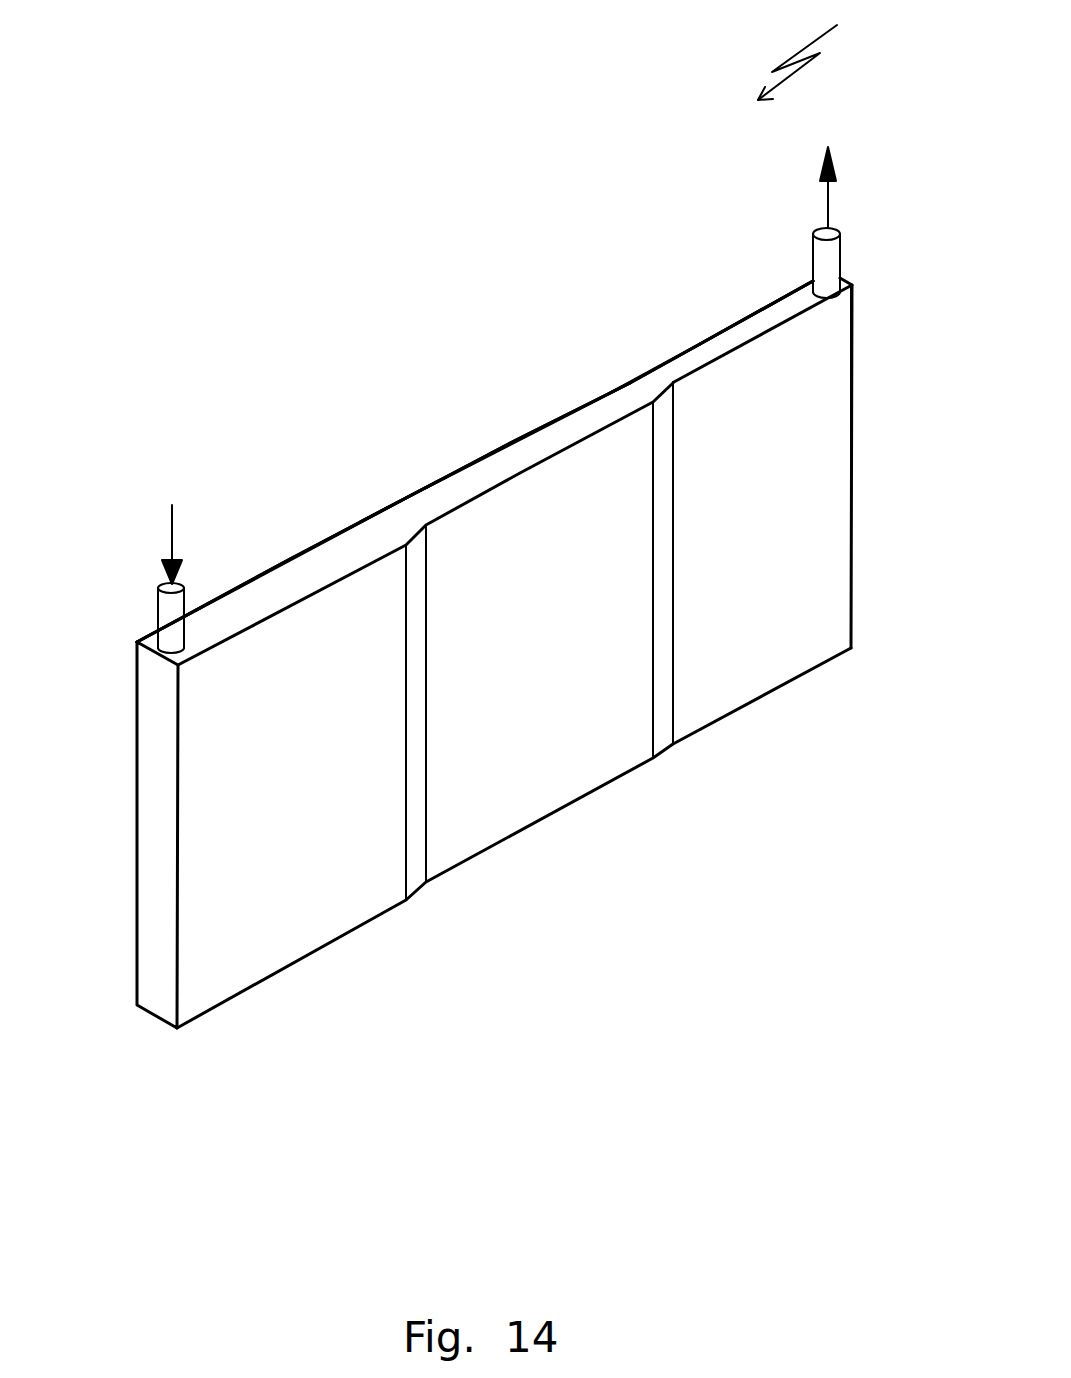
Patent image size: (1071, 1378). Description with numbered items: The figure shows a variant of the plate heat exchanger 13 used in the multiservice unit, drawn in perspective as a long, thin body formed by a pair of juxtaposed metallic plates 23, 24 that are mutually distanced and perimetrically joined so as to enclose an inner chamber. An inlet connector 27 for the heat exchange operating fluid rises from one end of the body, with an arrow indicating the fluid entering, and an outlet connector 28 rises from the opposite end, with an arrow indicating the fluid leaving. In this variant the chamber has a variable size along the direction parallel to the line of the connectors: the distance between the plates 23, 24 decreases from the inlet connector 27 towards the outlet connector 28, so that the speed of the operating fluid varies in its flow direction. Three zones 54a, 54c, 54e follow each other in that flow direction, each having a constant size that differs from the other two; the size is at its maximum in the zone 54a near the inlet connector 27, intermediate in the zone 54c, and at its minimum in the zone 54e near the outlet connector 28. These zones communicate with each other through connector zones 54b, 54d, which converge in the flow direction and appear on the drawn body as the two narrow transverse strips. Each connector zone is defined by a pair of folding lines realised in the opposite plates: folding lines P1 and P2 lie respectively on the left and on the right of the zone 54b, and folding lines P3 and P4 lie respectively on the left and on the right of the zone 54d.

The heat exchanger 13 is at (817, 51).
The metallic plate 23 is at (324, 582).
The metallic plate 24 is at (253, 577).
The inlet connector 27 is at (168, 610).
The outlet connector 28 is at (823, 253).
The zone 54a is at (293, 583).
The connector zone 54b is at (406, 521).
The zone 54c is at (530, 452).
The connector zone 54d is at (660, 385).
The zone 54e is at (736, 346).
The folding line P1 is at (405, 753).
The folding line P2 is at (427, 712).
The folding line P3 is at (652, 572).
The folding line P4 is at (675, 532).